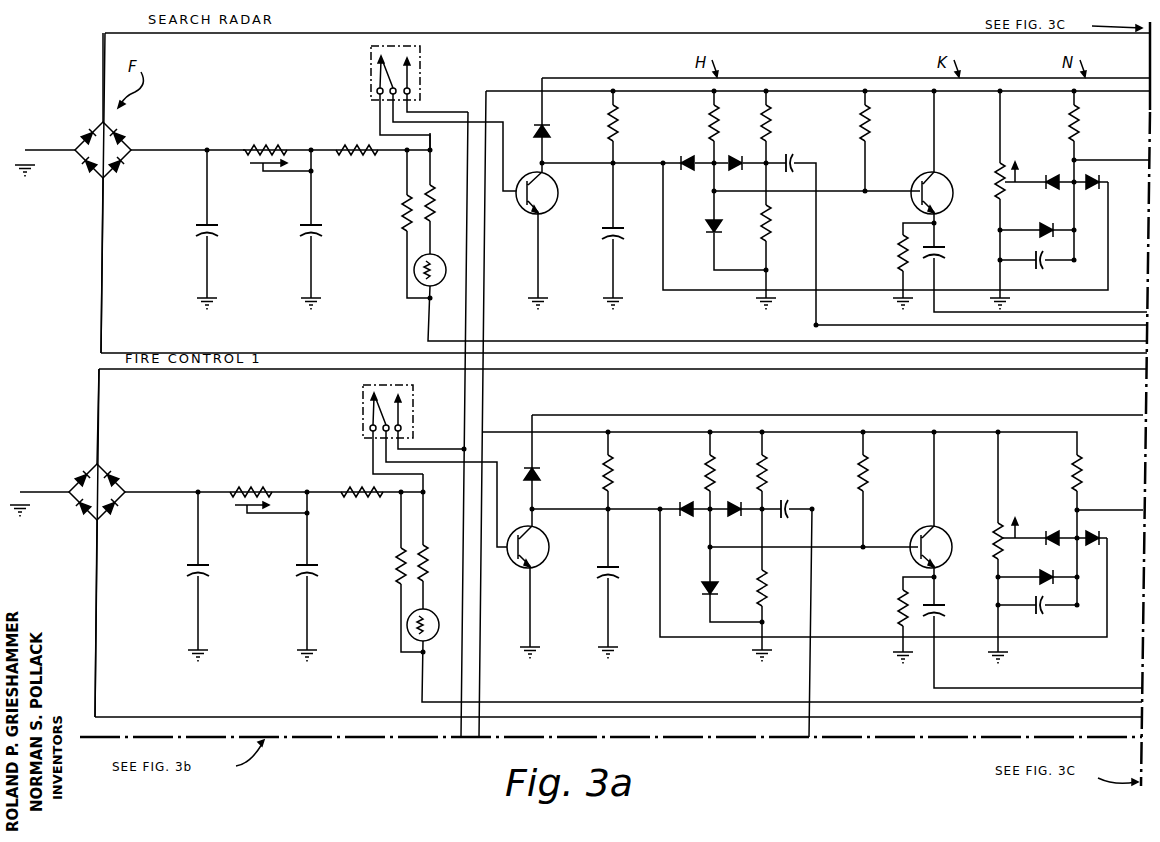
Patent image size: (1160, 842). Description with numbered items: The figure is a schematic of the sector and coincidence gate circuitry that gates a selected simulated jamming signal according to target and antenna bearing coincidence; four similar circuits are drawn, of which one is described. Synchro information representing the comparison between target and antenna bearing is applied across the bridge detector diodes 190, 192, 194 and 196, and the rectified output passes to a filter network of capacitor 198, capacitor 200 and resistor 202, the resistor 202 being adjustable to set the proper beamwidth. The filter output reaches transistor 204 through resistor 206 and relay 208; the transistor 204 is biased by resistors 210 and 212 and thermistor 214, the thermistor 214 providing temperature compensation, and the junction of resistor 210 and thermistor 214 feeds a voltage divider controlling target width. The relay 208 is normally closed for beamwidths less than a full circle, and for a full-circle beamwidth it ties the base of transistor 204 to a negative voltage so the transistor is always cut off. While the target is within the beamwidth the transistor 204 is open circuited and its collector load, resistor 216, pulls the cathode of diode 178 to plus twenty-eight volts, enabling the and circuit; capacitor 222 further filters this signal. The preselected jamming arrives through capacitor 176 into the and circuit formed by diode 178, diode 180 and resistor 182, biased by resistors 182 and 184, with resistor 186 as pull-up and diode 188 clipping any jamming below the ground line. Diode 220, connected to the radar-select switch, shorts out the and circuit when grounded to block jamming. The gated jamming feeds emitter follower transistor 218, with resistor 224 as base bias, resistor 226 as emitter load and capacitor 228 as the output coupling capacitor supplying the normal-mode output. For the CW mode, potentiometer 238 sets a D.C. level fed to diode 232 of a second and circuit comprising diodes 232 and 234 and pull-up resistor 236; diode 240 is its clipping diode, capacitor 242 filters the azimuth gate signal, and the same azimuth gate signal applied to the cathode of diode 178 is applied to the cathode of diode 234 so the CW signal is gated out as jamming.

The capacitor 176 is at (794, 160).
The diode 178 is at (688, 156).
The diode 180 is at (753, 144).
The resistor 182 is at (771, 132).
The resistor 184 is at (773, 210).
The pull-up resistor 186 is at (708, 131).
The clipping diode 188 is at (704, 232).
The bridge detector diode 190 is at (84, 128).
The bridge detector diode 192 is at (83, 168).
The bridge detector diode 194 is at (124, 128).
The bridge detector diode 196 is at (124, 168).
The capacitor 198 is at (197, 228).
The capacitor 200 is at (318, 221).
The resistor 202 is at (263, 147).
The transistor 204 is at (559, 190).
The resistor 206 is at (362, 138).
The relay 208 is at (424, 77).
The resistor 210 is at (405, 222).
The resistor 212 is at (434, 208).
The thermistor 214 is at (414, 283).
The resistor 216 is at (618, 133).
The transistor emitter follower 218 is at (919, 173).
The diode 220 is at (548, 131).
The capacitor 222 is at (636, 223).
The resistor 224 is at (868, 133).
The resistor 226 is at (900, 252).
The capacitor 228 is at (938, 252).
The diode 232 is at (1056, 168).
The diode 234 is at (1090, 192).
The resistor 236 is at (1072, 131).
The potentiometer 238 is at (1008, 177).
The clipping diode 240 is at (1038, 227).
The capacitor 242 is at (1034, 264).